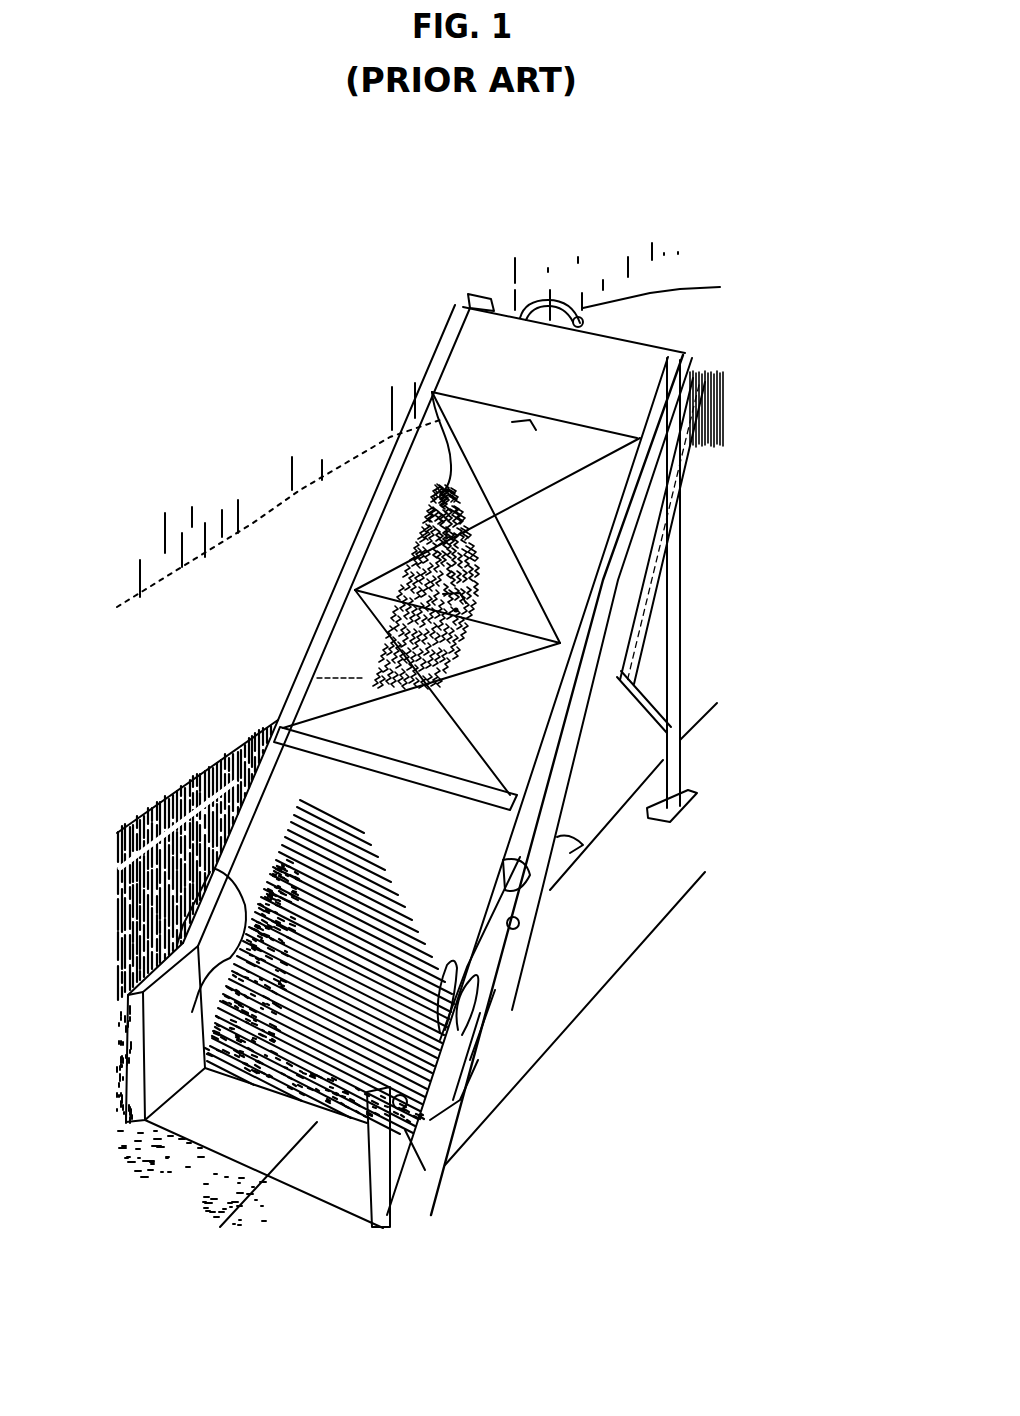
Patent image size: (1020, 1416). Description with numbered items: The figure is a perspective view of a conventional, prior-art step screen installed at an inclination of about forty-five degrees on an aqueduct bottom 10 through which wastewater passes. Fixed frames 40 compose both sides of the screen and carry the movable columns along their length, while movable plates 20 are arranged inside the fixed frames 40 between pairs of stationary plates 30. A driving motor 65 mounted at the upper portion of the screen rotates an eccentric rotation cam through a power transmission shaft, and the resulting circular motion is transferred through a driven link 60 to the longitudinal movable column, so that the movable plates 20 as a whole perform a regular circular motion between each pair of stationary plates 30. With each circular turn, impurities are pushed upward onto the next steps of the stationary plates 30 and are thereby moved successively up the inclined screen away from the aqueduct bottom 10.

The aqueduct bottom 10 is at (523, 1078).
The movable plates 20 is at (173, 917).
The stationary plates 30 is at (133, 818).
The fixed frames 40 is at (447, 350).
The driven link 60 is at (424, 1133).
The driving motor 65 is at (572, 322).